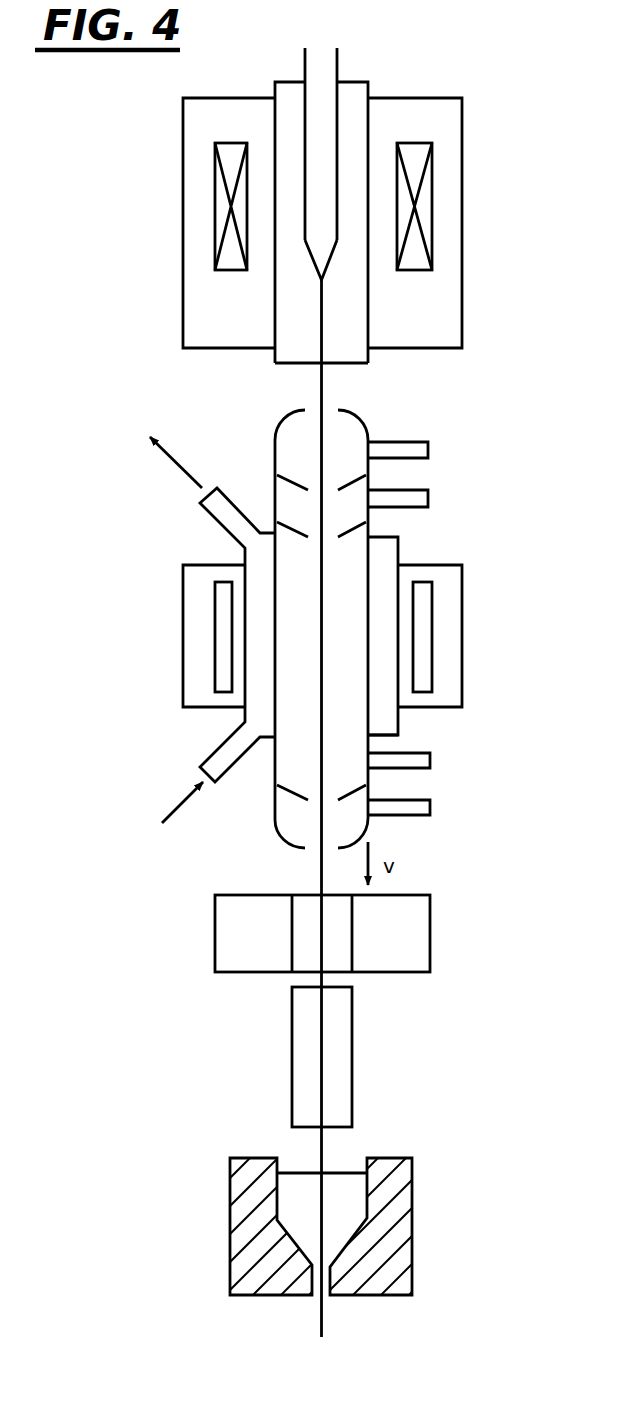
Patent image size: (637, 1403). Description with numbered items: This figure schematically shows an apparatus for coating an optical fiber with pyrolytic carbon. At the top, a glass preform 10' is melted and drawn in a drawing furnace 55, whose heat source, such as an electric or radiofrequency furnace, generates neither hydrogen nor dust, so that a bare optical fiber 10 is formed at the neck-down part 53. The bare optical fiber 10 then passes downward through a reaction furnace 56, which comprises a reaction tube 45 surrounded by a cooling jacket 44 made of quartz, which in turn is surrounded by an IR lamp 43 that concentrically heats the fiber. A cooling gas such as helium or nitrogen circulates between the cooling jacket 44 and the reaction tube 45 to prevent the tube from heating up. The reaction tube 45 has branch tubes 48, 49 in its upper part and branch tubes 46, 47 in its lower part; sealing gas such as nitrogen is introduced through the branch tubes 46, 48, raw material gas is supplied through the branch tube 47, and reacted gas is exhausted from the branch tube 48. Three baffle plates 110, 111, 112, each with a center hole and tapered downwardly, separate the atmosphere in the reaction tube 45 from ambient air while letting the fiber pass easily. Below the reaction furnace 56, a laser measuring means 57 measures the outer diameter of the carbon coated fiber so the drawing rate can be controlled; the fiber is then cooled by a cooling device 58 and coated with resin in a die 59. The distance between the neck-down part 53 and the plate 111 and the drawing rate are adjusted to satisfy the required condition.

The glass preform 10' is at (353, 203).
The neck-down part 53 is at (332, 265).
The drawing furnace 55 is at (452, 328).
The bare optical fiber 10 is at (363, 808).
The baffle plate 110 is at (284, 474).
The baffle plate 111 is at (283, 528).
The baffle plate 112 is at (297, 797).
The branch tube 49 is at (405, 442).
The branch tube 48 is at (410, 490).
The reaction tube 45 is at (368, 562).
The reaction furnace 56 is at (462, 600).
The IR lamp 43 is at (432, 646).
The cooling jacket 44 is at (400, 722).
The branch tube 47 is at (412, 768).
The branch tube 46 is at (402, 815).
The laser measuring means 57 is at (420, 922).
The cooling device 58 is at (352, 1062).
The die 59 is at (412, 1210).